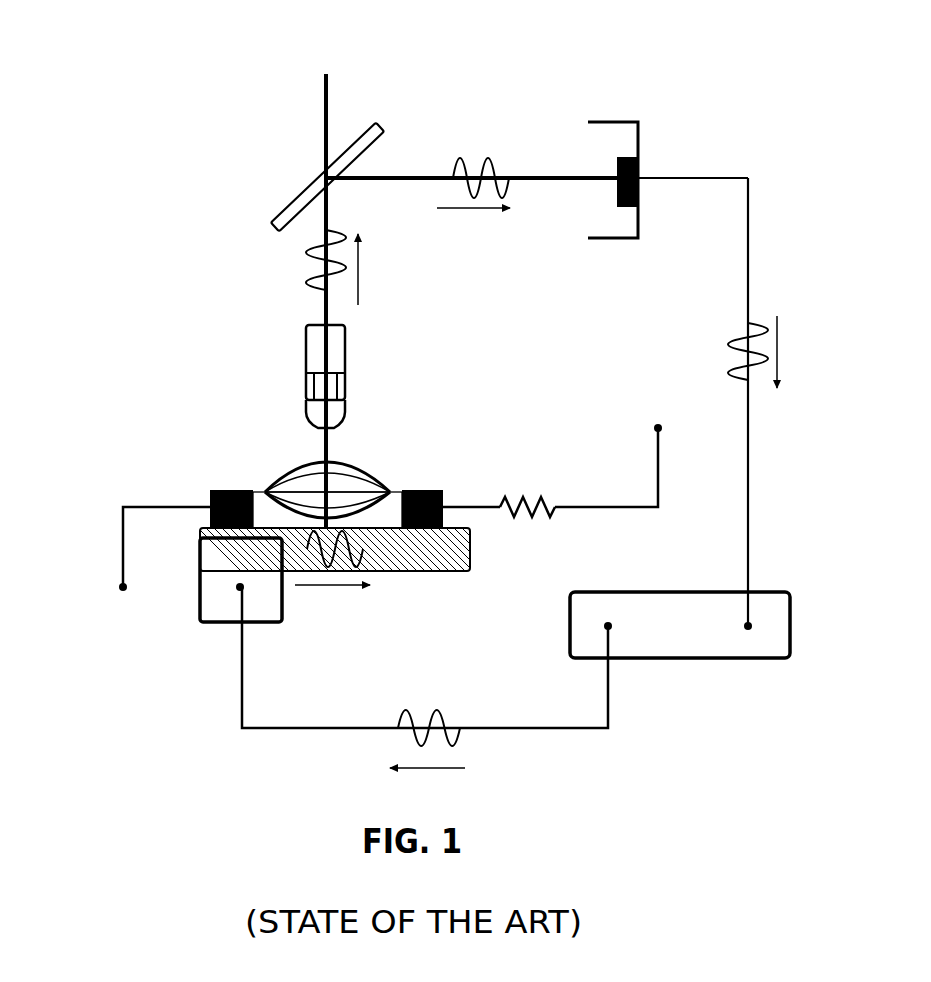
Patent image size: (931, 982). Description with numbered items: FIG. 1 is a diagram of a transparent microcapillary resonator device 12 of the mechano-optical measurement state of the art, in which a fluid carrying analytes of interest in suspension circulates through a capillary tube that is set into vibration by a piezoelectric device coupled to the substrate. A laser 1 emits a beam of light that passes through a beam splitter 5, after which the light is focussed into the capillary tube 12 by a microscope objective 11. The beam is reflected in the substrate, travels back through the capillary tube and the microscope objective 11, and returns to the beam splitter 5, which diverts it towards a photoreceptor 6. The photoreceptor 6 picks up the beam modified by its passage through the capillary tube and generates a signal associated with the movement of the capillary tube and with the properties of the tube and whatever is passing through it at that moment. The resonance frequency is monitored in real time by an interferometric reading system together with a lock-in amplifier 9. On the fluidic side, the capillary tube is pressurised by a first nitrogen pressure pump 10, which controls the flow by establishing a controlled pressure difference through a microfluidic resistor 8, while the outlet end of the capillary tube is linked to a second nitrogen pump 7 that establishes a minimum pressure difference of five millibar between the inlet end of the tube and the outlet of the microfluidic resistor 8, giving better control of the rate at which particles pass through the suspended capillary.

The laser 1 is at (323, 108).
The beam splitter 5 is at (287, 210).
The photoreceptor 6 is at (640, 150).
The second nitrogen pump 7 is at (657, 422).
The microfluidic resistor 8 is at (512, 498).
The lock-in amplifier 9 is at (655, 660).
The first nitrogen pressure pump 10 is at (118, 597).
The microscope objective 11 is at (306, 398).
The transparent microcapillary resonator device 12 is at (352, 462).